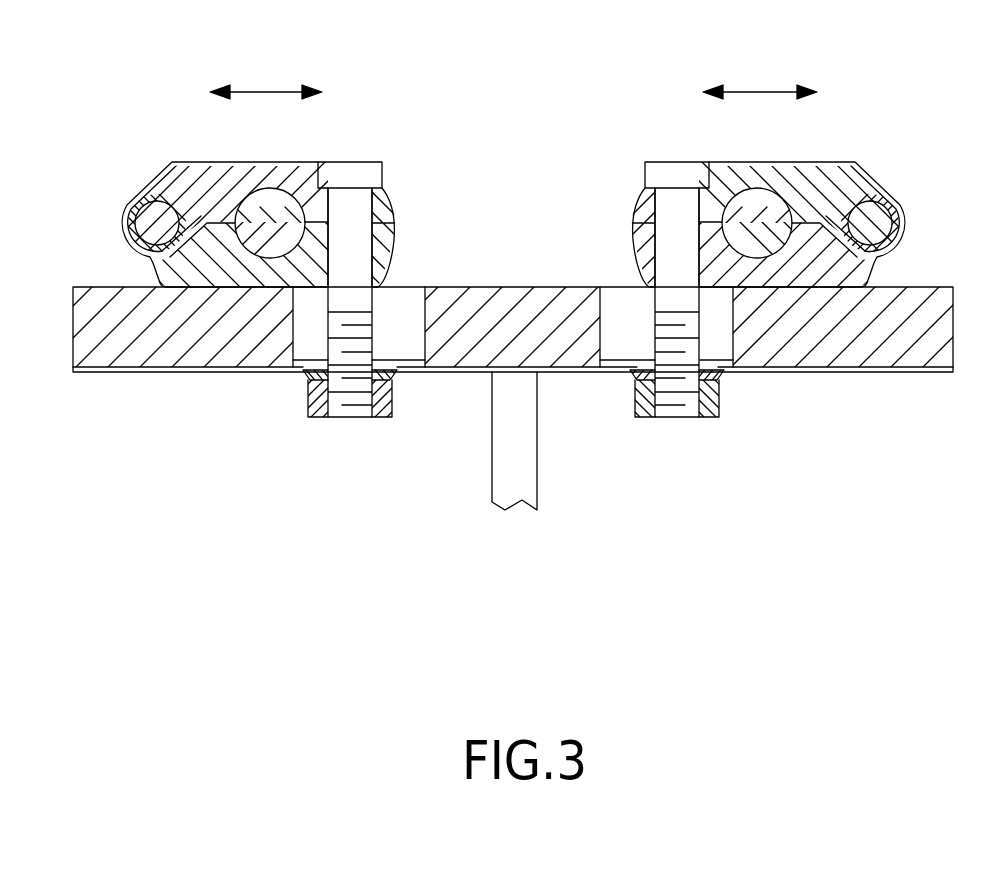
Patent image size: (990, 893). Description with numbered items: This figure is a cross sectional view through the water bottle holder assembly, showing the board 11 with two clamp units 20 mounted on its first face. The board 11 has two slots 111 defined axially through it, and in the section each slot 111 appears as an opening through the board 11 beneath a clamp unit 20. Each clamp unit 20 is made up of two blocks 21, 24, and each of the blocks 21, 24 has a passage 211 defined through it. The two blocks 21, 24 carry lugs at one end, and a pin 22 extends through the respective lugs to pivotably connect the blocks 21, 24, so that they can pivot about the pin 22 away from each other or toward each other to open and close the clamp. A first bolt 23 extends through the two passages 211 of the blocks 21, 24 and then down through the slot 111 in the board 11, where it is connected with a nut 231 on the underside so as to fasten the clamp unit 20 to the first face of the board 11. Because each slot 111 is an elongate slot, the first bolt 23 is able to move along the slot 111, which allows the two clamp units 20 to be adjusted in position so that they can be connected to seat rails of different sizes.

The board 11 is at (886, 362).
The slot 111 is at (612, 340).
The clamp unit 20 is at (504, 240).
The block 21 is at (857, 172).
The passage 211 is at (358, 192).
The pin 22 is at (884, 220).
The first bolt 23 is at (687, 172).
The nut 231 is at (713, 397).
The block 24 is at (868, 273).